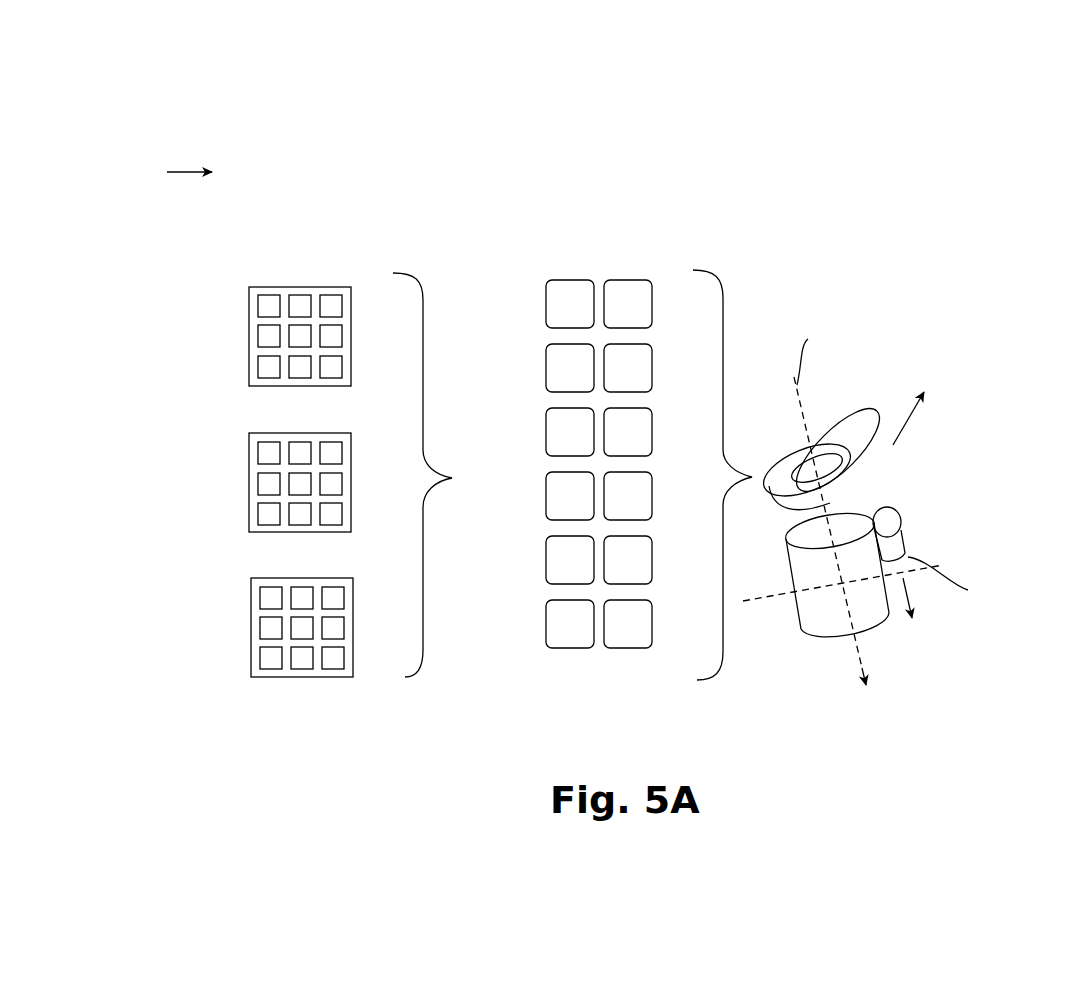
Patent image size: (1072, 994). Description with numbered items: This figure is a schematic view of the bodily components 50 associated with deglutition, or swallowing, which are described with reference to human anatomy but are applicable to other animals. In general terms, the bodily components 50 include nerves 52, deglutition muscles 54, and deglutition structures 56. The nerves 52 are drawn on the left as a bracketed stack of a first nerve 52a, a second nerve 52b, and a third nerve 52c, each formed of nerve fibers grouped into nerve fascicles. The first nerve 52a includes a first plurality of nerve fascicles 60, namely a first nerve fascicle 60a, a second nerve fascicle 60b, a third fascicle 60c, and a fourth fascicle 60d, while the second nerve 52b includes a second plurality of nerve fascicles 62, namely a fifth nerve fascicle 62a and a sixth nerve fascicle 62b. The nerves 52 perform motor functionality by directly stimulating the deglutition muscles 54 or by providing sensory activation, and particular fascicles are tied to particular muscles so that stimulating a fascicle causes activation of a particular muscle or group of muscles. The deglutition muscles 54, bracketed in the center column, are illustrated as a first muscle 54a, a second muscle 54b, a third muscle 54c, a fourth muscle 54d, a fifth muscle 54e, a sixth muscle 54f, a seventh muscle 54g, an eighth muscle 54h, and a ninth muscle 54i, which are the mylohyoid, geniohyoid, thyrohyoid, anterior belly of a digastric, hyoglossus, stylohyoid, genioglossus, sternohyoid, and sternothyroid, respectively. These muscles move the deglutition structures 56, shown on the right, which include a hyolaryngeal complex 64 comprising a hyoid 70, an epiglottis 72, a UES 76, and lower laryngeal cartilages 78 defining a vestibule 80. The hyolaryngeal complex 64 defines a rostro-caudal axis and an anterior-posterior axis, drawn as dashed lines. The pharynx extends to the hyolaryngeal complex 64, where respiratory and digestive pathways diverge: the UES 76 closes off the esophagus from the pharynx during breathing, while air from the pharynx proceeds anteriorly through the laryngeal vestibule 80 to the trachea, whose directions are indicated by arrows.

The bodily components 50 is at (796, 240).
The nerves 52 is at (318, 690).
The first nerve 52a is at (230, 335).
The second nerve 52b is at (232, 482).
The third nerve 52c is at (233, 617).
The deglutition muscles 54 is at (620, 674).
The first muscle 54a is at (557, 292).
The second muscle 54b is at (558, 630).
The third muscle 54c is at (642, 566).
The fourth muscle 54d is at (556, 368).
The fifth muscle 54e is at (642, 368).
The sixth muscle 54f is at (557, 490).
The seventh muscle 54g is at (640, 292).
The eighth muscle 54h is at (556, 428).
The ninth muscle 54i is at (561, 553).
The deglutition structures 56 is at (857, 700).
The first plurality of nerve fascicles 60 is at (284, 285).
The first nerve fascicle 60a is at (332, 305).
The second nerve fascicle 60b is at (333, 340).
The third fascicle 60c is at (300, 366).
The fourth fascicle 60d is at (268, 305).
The second plurality of nerve fascicles 62 is at (287, 437).
The fifth nerve fascicle 62a is at (333, 512).
The sixth nerve fascicle 62b is at (333, 452).
The hyolaryngeal complex 64 is at (964, 392).
The hyoid 70 is at (797, 445).
The epiglottis 72 is at (856, 420).
The UES 76 is at (898, 545).
The lower laryngeal cartilages 78 is at (815, 628).
The vestibule 80 is at (862, 504).